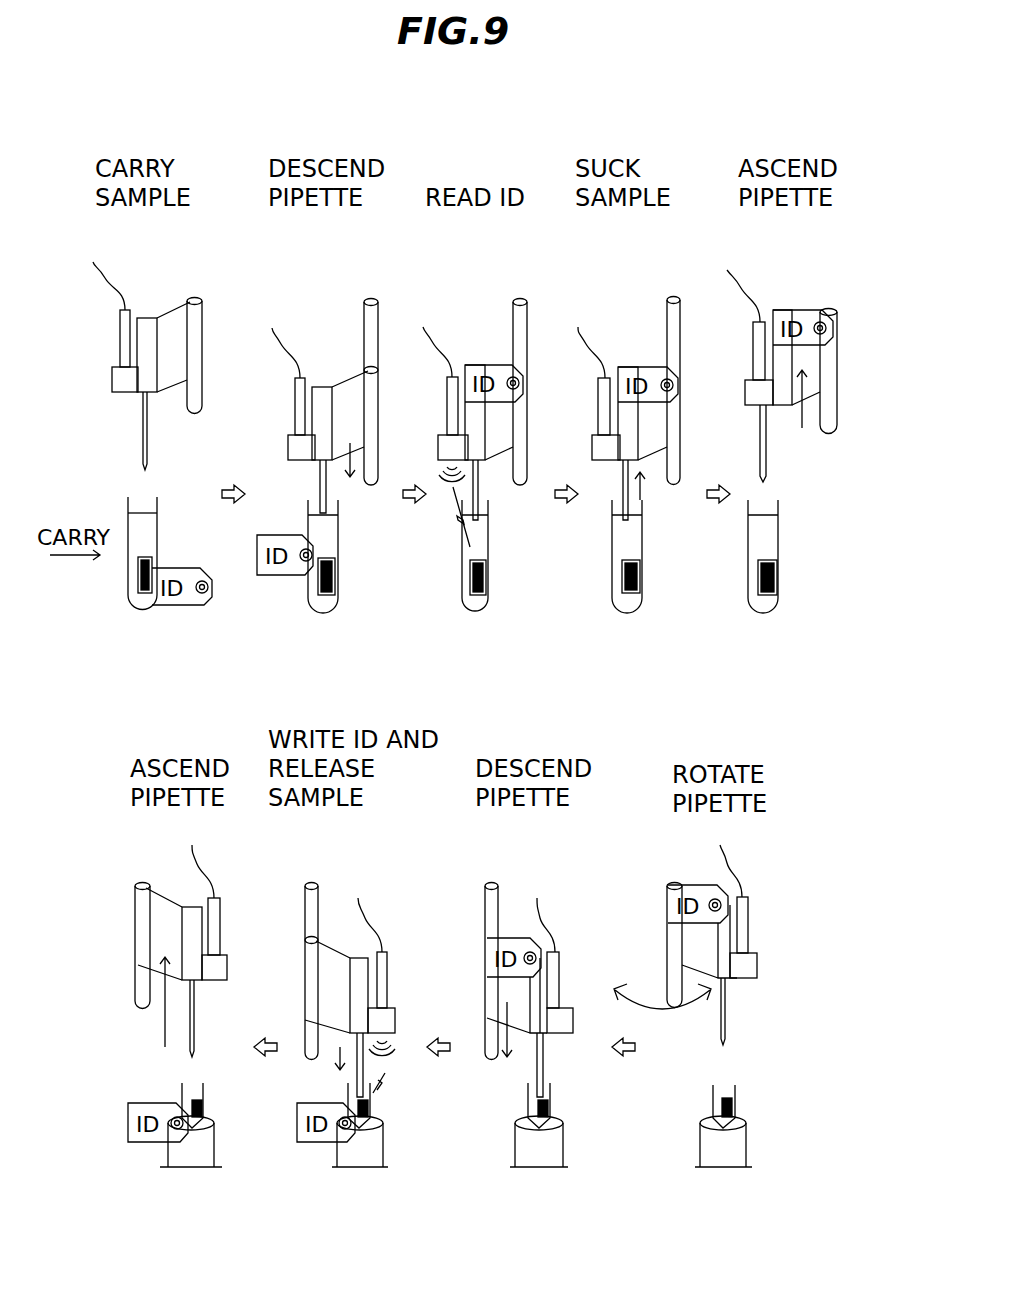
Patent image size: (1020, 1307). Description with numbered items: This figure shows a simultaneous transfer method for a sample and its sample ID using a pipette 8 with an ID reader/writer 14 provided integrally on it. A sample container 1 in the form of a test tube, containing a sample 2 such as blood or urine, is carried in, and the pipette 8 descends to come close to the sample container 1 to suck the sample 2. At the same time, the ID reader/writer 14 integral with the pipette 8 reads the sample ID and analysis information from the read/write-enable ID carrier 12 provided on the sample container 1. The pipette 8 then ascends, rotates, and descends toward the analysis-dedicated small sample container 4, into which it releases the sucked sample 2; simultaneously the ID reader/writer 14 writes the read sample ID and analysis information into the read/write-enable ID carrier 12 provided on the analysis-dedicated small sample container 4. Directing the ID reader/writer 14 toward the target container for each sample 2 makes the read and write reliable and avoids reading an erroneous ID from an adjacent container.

The sample container 1 is at (128, 503).
The sample 2 is at (150, 530).
The analysis-dedicated small sample container 4 is at (700, 1125).
The pipette 8 is at (178, 318).
The read/write-enable ID carrier 12 is at (138, 578).
The ID reader/writer 14 is at (125, 330).